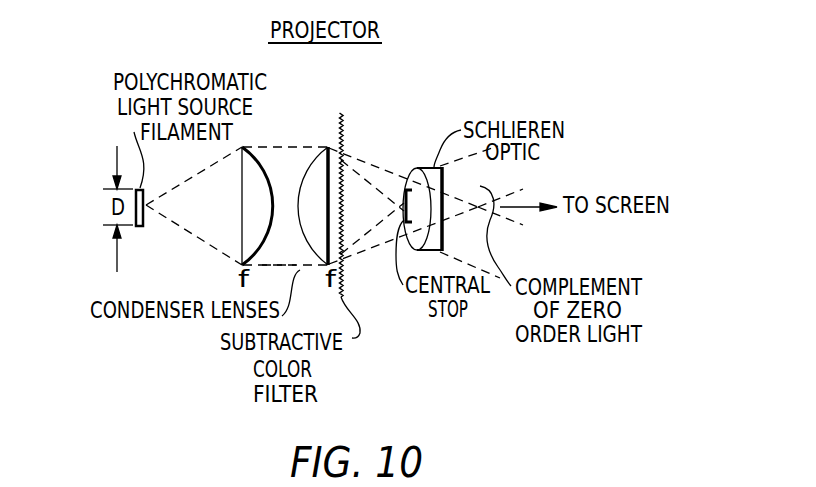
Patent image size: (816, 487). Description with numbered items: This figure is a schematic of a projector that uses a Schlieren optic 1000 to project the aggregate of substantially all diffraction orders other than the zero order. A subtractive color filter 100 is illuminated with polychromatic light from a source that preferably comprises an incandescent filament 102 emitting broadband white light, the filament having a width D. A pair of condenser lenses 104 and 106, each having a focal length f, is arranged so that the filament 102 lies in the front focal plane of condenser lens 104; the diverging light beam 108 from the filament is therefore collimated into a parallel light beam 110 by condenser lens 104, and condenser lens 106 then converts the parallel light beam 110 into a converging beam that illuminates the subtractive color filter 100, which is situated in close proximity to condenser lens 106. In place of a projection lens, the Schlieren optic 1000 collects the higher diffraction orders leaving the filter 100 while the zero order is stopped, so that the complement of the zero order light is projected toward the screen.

The subtractive color filter 100 is at (342, 112).
The incandescent filament 102 is at (128, 229).
The condenser lens 104 is at (242, 146).
The condenser lens 106 is at (303, 168).
The diverging light beam 108 is at (210, 236).
The parallel light beam 110 is at (276, 246).
The Schlieren optic 1000 is at (431, 167).